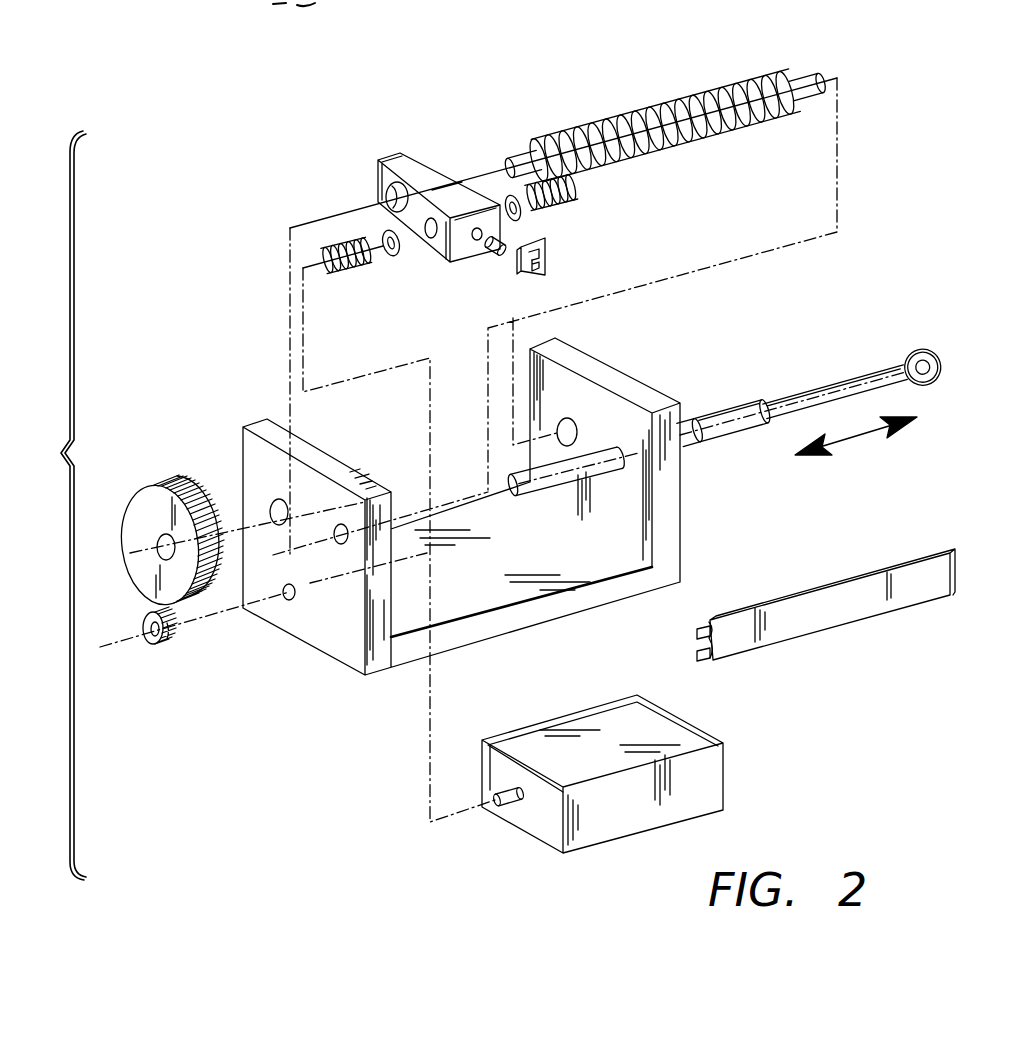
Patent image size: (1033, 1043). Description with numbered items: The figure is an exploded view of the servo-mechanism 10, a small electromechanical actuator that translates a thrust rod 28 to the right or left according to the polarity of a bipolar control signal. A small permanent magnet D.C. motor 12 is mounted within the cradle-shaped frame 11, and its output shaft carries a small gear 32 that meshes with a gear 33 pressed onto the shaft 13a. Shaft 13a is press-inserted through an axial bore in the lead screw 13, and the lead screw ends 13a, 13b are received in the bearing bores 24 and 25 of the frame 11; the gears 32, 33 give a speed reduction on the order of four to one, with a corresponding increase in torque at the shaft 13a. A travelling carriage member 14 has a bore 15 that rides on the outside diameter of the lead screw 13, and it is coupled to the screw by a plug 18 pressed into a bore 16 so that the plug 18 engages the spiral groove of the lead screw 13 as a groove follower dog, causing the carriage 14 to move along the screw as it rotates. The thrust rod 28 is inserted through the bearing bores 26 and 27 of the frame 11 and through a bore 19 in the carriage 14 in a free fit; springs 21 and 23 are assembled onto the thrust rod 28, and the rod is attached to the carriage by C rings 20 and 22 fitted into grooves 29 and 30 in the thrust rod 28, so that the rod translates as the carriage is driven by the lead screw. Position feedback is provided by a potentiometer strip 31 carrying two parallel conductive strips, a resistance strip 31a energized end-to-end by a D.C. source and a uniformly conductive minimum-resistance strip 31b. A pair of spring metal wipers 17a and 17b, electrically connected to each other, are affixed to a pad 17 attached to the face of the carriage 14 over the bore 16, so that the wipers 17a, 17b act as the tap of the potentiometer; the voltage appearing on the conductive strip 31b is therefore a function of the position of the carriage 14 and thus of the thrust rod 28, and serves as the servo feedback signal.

The ribbon feed mechanism assembly 10 is at (56, 505).
The cradle-shaped frame 11 is at (352, 652).
The D.C. motor 12 is at (582, 742).
The lead screw 13 is at (660, 104).
The shaft 13a is at (513, 150).
The shaft end stub 13b is at (814, 72).
The travelling carriage member 14 is at (414, 162).
The bore 15 is at (389, 194).
The bore 16 is at (475, 239).
The pad 17 is at (585, 267).
The spring metal wiper 17a is at (540, 252).
The spring metal wiper 17b is at (540, 262).
The plug 18 is at (495, 252).
The bore 19 is at (428, 234).
The C ring 20 is at (383, 238).
The spring 21 is at (342, 274).
The C ring 22 is at (518, 216).
The spring 23 is at (575, 190).
The bearing bore 24 is at (272, 510).
The bearing bore 25 is at (563, 426).
The bearing bore 26 is at (338, 544).
The bearing bore 27 is at (614, 465).
The thrust rod 28 is at (548, 488).
The groove 29 is at (696, 422).
The groove 30 is at (767, 408).
The potentiometer strip 31 is at (820, 620).
The resistance strip 31a is at (696, 634).
The conductive strip 31b is at (696, 656).
The gear 32 is at (156, 646).
The gear 33 is at (150, 500).